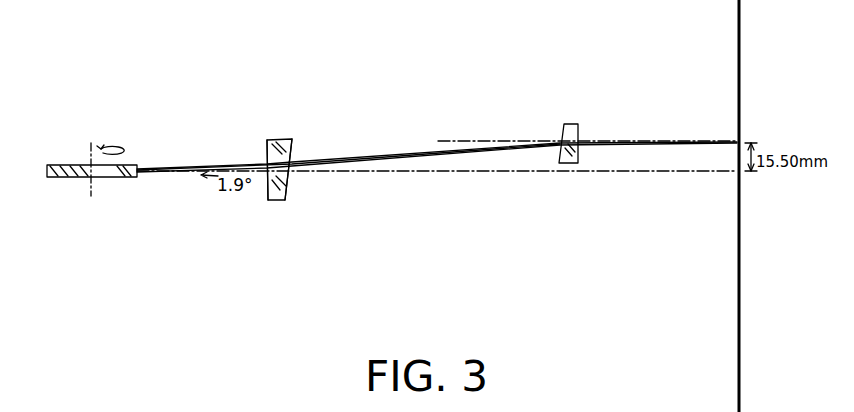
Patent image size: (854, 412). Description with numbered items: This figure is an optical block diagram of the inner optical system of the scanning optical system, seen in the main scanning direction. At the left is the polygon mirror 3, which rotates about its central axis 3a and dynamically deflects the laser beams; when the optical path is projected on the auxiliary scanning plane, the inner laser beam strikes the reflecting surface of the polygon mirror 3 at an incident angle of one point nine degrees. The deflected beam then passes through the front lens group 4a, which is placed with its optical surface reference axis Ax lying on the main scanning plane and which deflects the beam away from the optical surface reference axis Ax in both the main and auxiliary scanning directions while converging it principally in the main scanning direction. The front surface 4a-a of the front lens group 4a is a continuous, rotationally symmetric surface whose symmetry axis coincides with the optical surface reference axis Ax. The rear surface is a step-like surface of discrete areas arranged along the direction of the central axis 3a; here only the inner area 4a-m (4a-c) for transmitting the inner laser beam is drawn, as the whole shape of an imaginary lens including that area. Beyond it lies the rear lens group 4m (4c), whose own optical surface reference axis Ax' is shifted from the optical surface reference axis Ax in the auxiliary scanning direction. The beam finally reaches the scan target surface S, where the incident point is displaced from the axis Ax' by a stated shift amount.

The polygon mirror 3 is at (128, 163).
The central axis of the polygon mirror 3a is at (96, 190).
The front lens group 4a is at (289, 118).
The front surface of the front lens group 4a-a is at (270, 196).
The inner area of the rear surface of the front lens group 4a-m is at (361, 183).
The inner area of the rear surface of the front lens group 4a-c is at (293, 178).
The rear lens group 4m is at (576, 114).
The rear lens group 4c is at (564, 122).
The scan target surface S is at (737, 40).
The optical surface reference axis Ax is at (437, 195).
The optical surface reference axis of the rear lens group Ax' is at (580, 117).